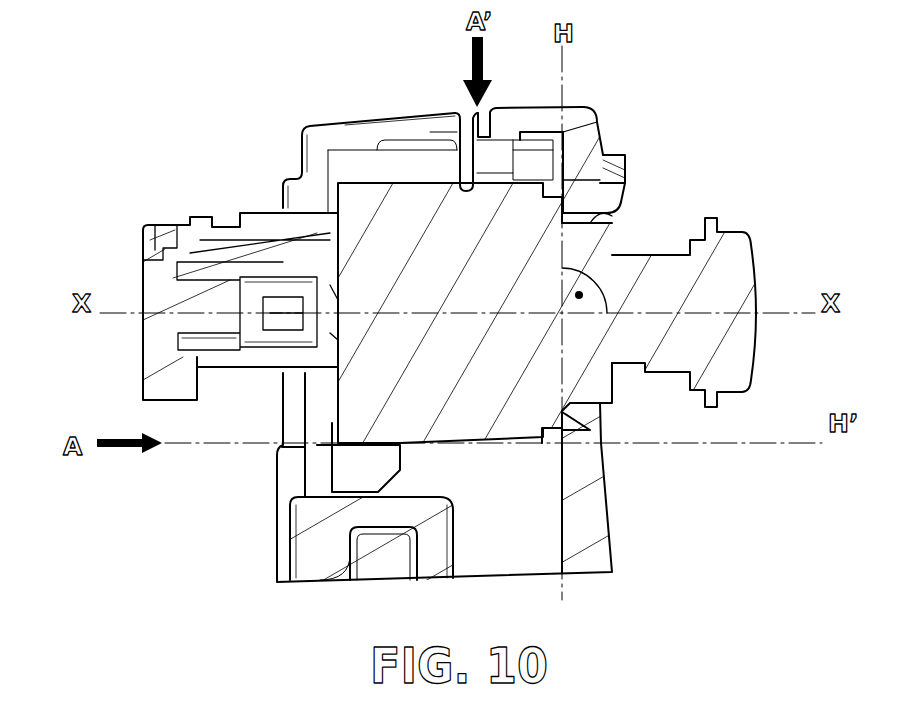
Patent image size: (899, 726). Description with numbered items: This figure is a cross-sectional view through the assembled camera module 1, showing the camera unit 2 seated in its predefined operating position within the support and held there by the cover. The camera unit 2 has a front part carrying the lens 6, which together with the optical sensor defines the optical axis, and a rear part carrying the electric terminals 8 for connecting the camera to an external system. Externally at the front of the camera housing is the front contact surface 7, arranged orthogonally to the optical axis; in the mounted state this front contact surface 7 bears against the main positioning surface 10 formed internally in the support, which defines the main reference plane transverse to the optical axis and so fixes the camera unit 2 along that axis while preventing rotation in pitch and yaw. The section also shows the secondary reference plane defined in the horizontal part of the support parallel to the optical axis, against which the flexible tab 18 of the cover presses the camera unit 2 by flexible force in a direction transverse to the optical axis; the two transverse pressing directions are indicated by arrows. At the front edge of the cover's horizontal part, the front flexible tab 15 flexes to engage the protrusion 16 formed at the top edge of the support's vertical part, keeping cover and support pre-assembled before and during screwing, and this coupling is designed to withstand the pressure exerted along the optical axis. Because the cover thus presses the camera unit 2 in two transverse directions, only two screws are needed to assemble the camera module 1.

The camera module 1 is at (96, 199).
The camera unit 2 is at (395, 233).
The lens 6 is at (736, 275).
The front contact surface 7 is at (623, 155).
The electric terminals 8 is at (213, 278).
The main positioning surface 10 is at (590, 430).
The front flexible tab 15 is at (587, 123).
The protrusion 16 is at (626, 175).
The flexible tab 18 is at (435, 115).